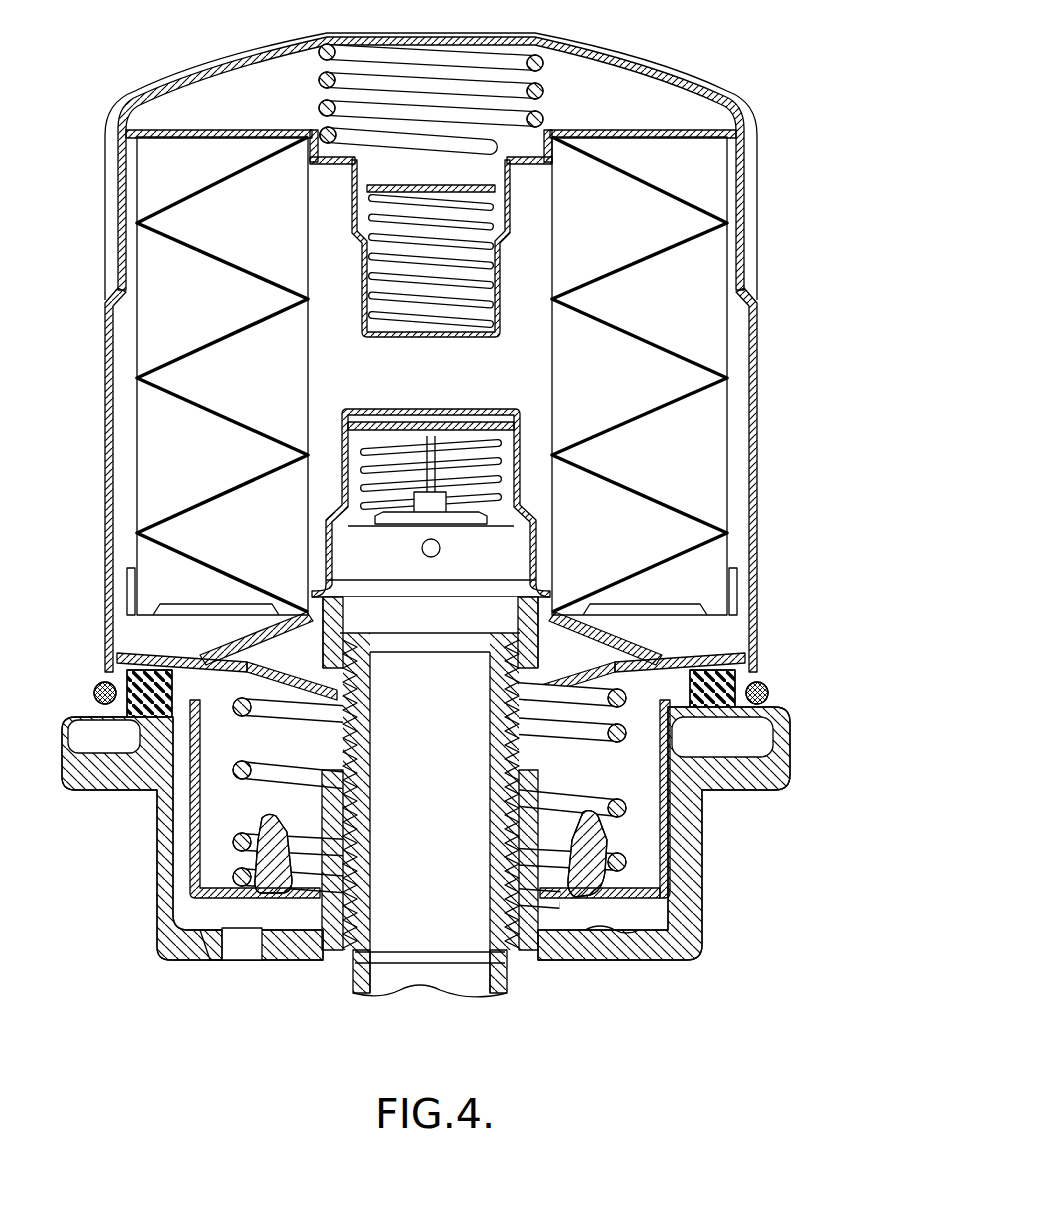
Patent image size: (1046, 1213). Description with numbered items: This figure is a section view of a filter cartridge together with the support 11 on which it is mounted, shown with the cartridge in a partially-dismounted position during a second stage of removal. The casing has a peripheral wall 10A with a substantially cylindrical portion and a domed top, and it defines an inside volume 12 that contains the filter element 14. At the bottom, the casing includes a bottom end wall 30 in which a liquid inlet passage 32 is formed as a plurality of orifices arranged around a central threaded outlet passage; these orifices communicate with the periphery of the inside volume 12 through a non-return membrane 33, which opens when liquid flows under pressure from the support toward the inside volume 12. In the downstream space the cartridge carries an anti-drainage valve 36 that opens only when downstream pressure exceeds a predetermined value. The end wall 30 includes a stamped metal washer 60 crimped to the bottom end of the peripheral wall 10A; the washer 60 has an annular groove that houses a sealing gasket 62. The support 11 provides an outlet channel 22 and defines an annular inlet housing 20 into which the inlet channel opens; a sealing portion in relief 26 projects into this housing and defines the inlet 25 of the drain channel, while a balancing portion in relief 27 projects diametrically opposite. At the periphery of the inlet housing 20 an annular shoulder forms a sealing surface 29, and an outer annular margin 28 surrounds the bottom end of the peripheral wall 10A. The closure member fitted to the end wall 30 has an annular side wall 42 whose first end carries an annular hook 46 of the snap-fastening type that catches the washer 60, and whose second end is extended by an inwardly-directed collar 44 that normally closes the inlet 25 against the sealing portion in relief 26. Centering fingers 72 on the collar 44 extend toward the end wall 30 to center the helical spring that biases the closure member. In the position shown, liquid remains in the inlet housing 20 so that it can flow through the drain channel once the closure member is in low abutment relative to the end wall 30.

The peripheral wall 10A is at (748, 200).
The inside volume 12 is at (108, 380).
The filter element 14 is at (178, 483).
The anti-drainage valve 36 is at (431, 468).
The non-return membrane 33 is at (145, 618).
The liquid inlet passage 32 is at (590, 660).
The bottom end wall 30 is at (597, 680).
The outer annular margin 28 is at (82, 718).
The stamped metal washer 60 is at (762, 692).
The annular hook 46 is at (215, 725).
The sealing gasket 62 is at (740, 713).
The sealing surface 29 is at (133, 753).
The annular inlet housing 20 is at (640, 775).
The annular side wall 42 is at (668, 833).
The support 11 is at (703, 928).
The sealing portion in relief 26 is at (208, 948).
The inlet of the drain channel 25 is at (250, 945).
The outlet channel 22 is at (417, 903).
The centering fingers 72 is at (578, 895).
The balancing portion in relief 27 is at (606, 935).
The inwardly-directed collar 44 is at (645, 895).